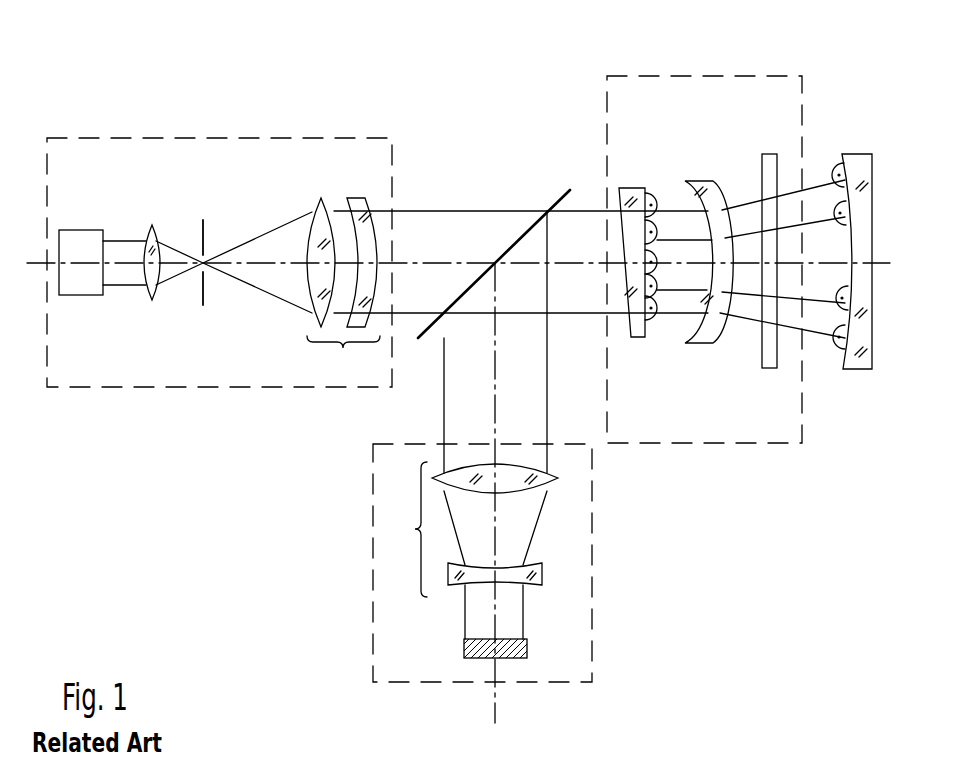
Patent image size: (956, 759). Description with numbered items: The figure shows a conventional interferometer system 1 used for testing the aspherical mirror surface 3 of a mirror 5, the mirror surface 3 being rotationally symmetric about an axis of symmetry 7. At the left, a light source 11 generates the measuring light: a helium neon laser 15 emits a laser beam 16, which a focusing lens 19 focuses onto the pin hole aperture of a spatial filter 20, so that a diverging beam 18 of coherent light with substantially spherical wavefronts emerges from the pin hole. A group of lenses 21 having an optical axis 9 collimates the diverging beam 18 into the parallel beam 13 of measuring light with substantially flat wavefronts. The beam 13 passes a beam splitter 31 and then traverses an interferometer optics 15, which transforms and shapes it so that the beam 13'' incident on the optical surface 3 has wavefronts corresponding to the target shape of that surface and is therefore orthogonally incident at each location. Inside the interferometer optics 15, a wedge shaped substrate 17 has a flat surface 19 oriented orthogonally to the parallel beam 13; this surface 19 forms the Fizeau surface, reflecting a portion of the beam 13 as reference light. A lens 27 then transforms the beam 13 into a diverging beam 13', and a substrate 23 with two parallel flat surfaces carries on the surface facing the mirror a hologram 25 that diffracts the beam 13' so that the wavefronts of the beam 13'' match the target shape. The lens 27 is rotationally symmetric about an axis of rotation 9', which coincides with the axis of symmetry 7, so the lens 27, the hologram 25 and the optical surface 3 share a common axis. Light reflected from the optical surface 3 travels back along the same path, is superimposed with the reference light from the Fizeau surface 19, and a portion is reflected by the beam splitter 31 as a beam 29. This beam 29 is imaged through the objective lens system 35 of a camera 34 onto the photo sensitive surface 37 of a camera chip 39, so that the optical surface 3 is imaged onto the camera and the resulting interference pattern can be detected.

The interferometer system 1 is at (403, 93).
The light source 11 is at (251, 138).
The helium neon laser / interferometer optics 15 is at (83, 230).
The laser beam 16 is at (124, 287).
The focusing lens / flat (Fizeau) surface 19 is at (151, 227).
The spatial filter 20 is at (206, 232).
The diverging beam 18 is at (248, 285).
The optical axis 9 is at (485, 280).
The group of lenses 21 is at (343, 289).
The beam of measuring light 13 is at (449, 174).
The beam splitter 31 is at (562, 190).
The reflected beam 29 is at (442, 398).
The axis of rotation 9' is at (578, 321).
The wedge shaped substrate 17 is at (638, 337).
The diverging beam 13' is at (702, 208).
The lens 27 is at (700, 344).
The beam incident on optical surface 13'' is at (786, 223).
The substrate 23 is at (770, 154).
The hologram 25 is at (778, 358).
The aspherical mirror surface 3 is at (841, 358).
The mirror 5 is at (862, 369).
The axis of symmetry 7 is at (886, 262).
The camera 34 is at (372, 581).
The objective lens system 35 is at (469, 550).
The photo sensitive surface 37 is at (512, 640).
The camera chip 39 is at (462, 645).